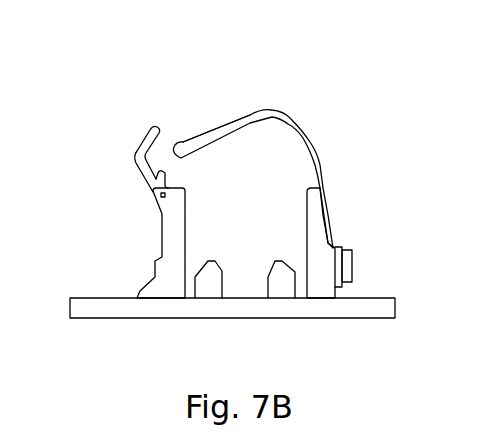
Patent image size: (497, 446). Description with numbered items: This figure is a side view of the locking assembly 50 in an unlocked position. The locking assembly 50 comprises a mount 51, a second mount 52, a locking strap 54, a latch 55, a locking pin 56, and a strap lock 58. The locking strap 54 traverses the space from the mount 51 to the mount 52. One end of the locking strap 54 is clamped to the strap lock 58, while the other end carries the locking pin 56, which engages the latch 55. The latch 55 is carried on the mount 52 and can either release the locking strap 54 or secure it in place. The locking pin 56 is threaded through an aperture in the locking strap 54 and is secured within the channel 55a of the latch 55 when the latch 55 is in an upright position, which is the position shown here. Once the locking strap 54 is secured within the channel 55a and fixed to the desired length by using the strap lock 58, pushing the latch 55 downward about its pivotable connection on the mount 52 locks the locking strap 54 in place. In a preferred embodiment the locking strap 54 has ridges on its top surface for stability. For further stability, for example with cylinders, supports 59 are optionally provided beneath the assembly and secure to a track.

The locking assembly 50 is at (115, 88).
The mount 51 is at (330, 218).
The mount 52 is at (160, 232).
The locking strap 54 is at (289, 110).
The latch 55 is at (138, 140).
The channel 55a is at (158, 165).
The locking pin 56 is at (180, 140).
The strap lock 58 is at (357, 263).
The supports 59 is at (208, 302).